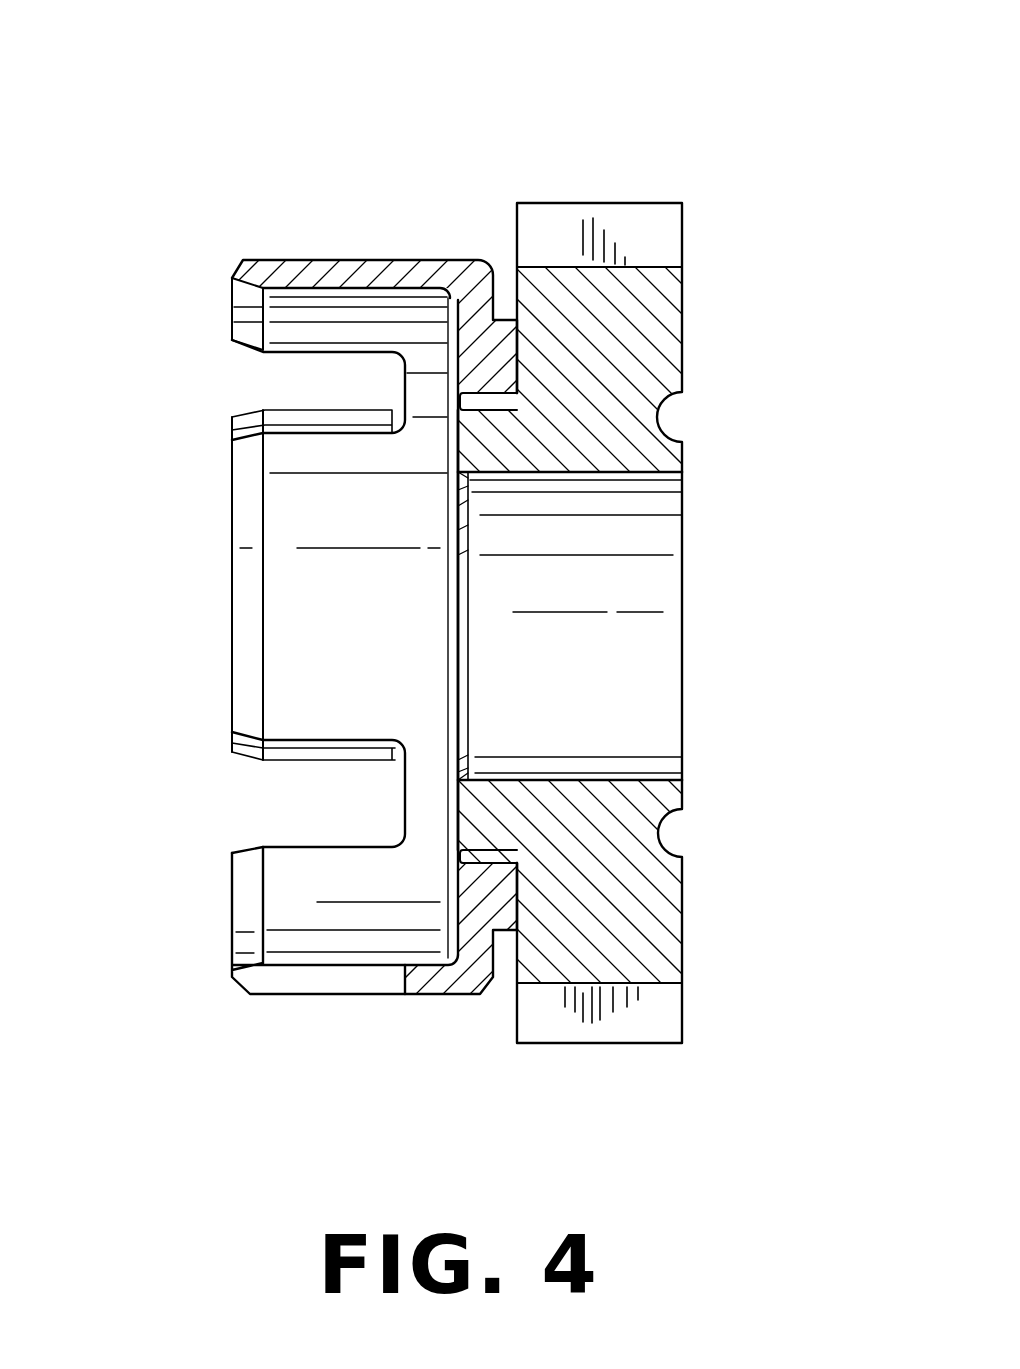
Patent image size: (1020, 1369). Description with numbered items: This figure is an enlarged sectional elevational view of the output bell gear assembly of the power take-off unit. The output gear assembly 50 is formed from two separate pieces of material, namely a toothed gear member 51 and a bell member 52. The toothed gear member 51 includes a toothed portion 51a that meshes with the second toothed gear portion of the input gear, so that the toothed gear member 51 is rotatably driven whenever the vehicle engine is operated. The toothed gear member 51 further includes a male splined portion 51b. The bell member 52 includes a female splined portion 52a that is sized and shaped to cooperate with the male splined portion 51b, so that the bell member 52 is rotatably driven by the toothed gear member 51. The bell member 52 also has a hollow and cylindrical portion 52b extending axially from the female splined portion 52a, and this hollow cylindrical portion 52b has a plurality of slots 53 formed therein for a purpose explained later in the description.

The output gear assembly 50 is at (712, 114).
The toothed gear member 51 is at (727, 310).
The toothed portion 51a is at (578, 235).
The male splined portion 51b is at (482, 404).
The bell member 52 is at (285, 168).
The female splined portion 52a is at (481, 857).
The hollow cylindrical portion 52b is at (374, 264).
The slots 53 is at (302, 408).